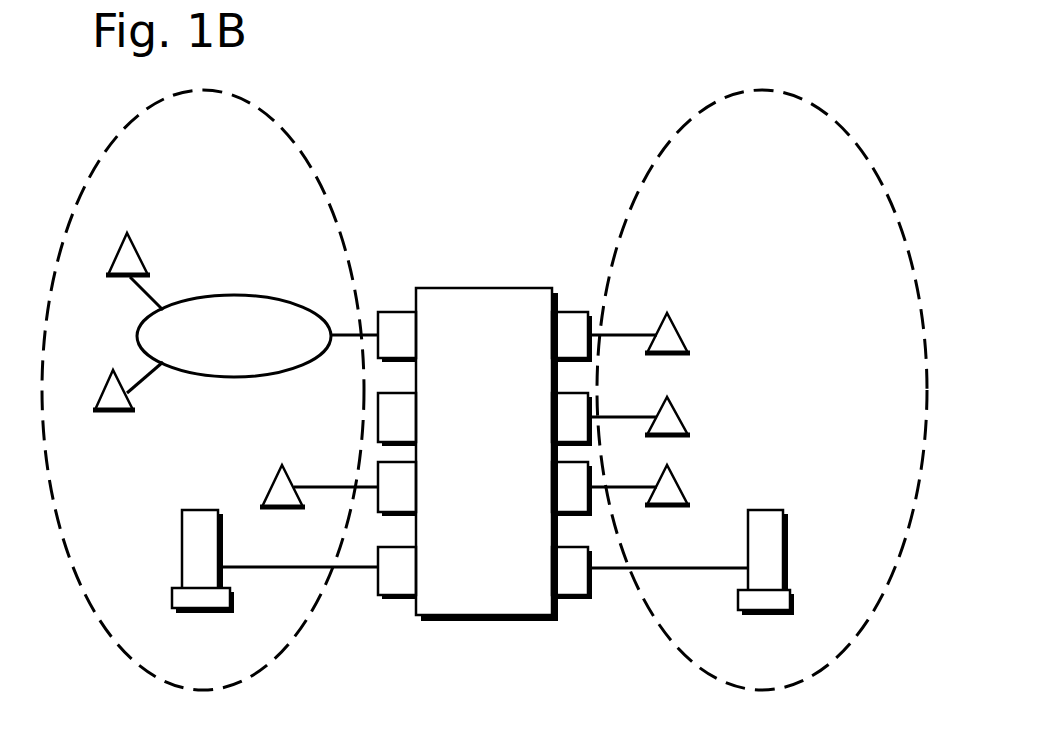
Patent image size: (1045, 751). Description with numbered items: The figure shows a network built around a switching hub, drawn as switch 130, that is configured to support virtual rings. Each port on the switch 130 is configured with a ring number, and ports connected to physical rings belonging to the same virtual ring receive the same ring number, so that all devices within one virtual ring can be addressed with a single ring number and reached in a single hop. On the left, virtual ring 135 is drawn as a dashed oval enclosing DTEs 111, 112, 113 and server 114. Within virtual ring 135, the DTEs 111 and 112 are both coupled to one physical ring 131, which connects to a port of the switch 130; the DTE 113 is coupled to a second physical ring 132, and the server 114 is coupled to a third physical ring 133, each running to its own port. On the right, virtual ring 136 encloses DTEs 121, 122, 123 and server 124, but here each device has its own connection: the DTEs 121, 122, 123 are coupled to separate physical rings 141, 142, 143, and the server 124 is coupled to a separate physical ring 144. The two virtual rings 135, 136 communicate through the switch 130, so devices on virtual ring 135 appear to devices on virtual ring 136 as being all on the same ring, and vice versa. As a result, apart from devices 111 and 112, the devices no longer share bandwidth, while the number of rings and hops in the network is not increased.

The DTE 111 is at (133, 246).
The DTE 112 is at (126, 415).
The DTE 113 is at (283, 513).
The server 114 is at (203, 590).
The DTE 121 is at (694, 335).
The DTE 122 is at (694, 419).
The DTE 123 is at (694, 488).
The server 124 is at (770, 590).
The switch 130 is at (497, 586).
The physical ring 131 is at (222, 295).
The physical ring 132 is at (317, 487).
The physical ring 133 is at (243, 567).
The virtual ring 135 is at (300, 142).
The virtual ring 136 is at (650, 182).
The physical ring 141 is at (623, 335).
The physical ring 142 is at (643, 417).
The physical ring 143 is at (640, 487).
The physical ring 144 is at (650, 568).